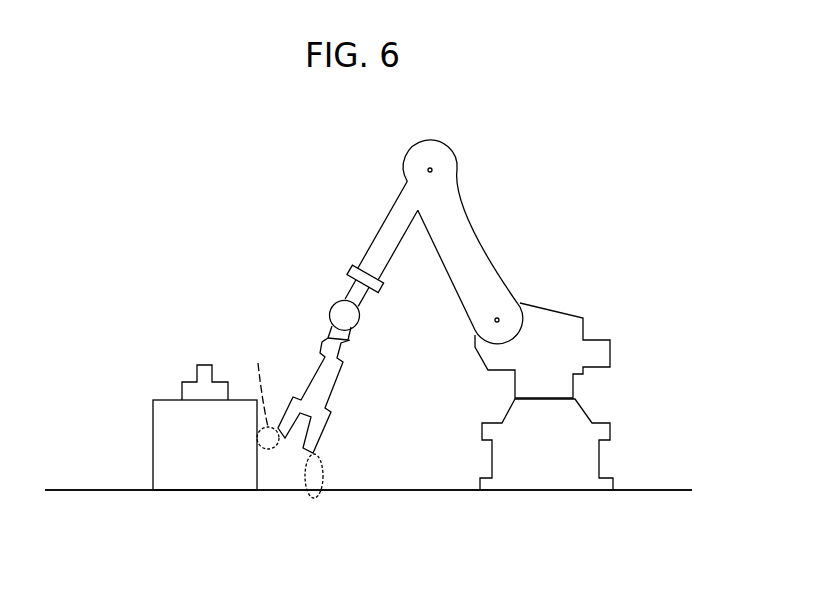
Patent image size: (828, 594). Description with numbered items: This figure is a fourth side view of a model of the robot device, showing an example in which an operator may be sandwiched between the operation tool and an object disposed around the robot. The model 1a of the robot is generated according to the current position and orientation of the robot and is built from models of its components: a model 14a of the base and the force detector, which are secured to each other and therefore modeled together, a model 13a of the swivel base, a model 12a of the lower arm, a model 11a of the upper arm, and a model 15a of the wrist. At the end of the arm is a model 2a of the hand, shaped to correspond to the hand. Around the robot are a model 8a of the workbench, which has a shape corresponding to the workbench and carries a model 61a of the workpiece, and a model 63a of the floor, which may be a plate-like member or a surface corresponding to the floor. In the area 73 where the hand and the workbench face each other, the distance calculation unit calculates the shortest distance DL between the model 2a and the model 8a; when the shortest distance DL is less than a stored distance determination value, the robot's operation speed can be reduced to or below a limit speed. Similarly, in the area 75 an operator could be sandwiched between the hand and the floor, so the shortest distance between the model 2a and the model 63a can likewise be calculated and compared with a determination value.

The model of the robot 1a is at (447, 142).
The model of the upper arm 11a is at (395, 227).
The model of the lower arm 12a is at (453, 224).
The model of the swivel base 13a is at (565, 329).
The model of the base and the force detector 14a is at (509, 461).
The model of the wrist 15a is at (356, 320).
The model of the hand 2a is at (325, 378).
The model of the workbench 8a is at (164, 445).
The model of the workpiece 61a is at (197, 390).
The model of the floor 63a is at (657, 489).
The area 73 is at (270, 452).
The area 75 is at (325, 478).
The shortest distance DL is at (263, 382).